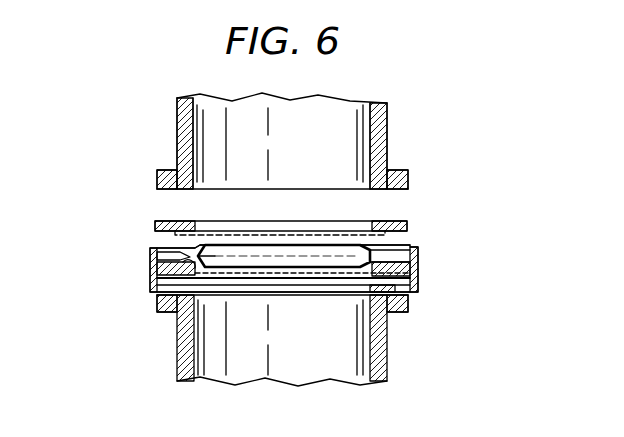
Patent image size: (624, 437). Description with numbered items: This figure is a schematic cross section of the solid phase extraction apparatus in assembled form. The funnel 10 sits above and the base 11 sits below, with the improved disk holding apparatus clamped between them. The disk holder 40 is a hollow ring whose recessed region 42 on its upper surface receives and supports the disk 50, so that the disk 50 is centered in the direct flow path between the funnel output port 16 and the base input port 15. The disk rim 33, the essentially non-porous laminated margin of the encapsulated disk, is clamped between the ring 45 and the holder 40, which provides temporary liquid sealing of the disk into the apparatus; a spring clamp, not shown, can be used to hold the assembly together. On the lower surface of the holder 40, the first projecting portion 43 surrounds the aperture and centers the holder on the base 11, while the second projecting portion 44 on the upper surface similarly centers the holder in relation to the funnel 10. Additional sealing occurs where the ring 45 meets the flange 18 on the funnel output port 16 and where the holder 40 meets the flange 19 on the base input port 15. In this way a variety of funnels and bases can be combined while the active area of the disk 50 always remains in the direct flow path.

The funnel 10 is at (372, 132).
The base 11 is at (372, 372).
The input port of the base 15 is at (300, 283).
The output port of the funnel 16 is at (292, 215).
The flange 18 is at (160, 178).
The flange 19 is at (160, 312).
The rim 33 is at (152, 265).
The disk holder 40 is at (420, 270).
The recessed region 42 is at (198, 260).
The first projecting portion 43 is at (150, 292).
The second projecting portion 44 is at (150, 248).
The ring 45 is at (334, 262).
The disk 50 is at (274, 258).